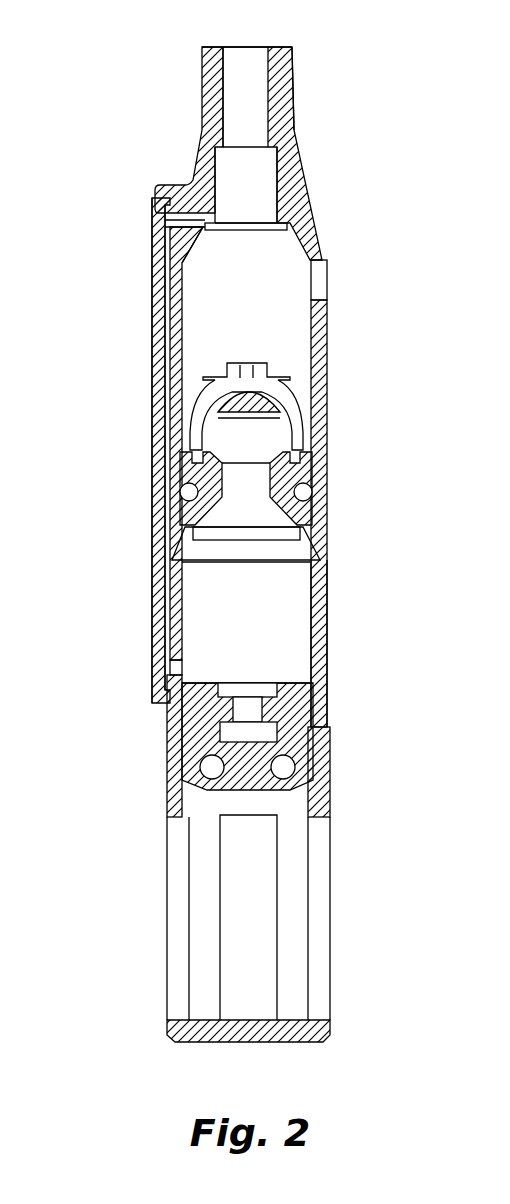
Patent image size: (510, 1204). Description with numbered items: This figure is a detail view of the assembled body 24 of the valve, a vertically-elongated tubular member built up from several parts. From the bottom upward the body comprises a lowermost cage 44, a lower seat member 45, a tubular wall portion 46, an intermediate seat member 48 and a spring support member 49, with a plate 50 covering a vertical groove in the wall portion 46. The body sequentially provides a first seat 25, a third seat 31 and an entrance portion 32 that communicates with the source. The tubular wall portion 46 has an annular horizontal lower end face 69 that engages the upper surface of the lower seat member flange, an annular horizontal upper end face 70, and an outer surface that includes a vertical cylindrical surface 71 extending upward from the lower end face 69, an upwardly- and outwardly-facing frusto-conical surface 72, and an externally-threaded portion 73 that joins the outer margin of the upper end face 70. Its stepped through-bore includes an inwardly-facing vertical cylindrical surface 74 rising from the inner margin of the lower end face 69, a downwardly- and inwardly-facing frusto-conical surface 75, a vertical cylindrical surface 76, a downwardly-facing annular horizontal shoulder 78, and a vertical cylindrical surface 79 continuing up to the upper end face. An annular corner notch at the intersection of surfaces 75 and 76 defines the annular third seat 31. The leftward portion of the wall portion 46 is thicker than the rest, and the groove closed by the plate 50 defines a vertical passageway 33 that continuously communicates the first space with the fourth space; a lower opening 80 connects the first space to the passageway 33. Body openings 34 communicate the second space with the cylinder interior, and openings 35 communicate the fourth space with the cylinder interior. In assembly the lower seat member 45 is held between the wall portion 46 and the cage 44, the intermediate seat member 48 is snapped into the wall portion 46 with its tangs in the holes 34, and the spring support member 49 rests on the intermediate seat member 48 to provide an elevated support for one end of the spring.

The assembled body 24 is at (122, 577).
The first seat 25 is at (272, 780).
The third seat 31 is at (280, 230).
The entrance portion 32 is at (247, 95).
The vertical passageway 33 is at (178, 350).
The body openings 34 is at (327, 527).
The body openings 35 is at (323, 280).
The lowermost cage 44 is at (168, 937).
The lower seat member 45 is at (172, 728).
The tubular wall portion 46 is at (327, 363).
The intermediate seat member 48 is at (192, 465).
The spring support member 49 is at (195, 407).
The plate 50 is at (160, 637).
The lower end face 69 is at (322, 730).
The upper end face 70 is at (283, 40).
The vertical cylindrical surface 71 is at (327, 590).
The frusto-conical surface 72 is at (308, 185).
The externally-threaded portion 73 is at (292, 75).
The vertical cylindrical surface 74 is at (180, 617).
The frusto-conical surface 75 is at (193, 252).
The vertical cylindrical surface 76 is at (277, 193).
The annular horizontal shoulder 78 is at (223, 150).
The vertical cylindrical surface 79 is at (238, 60).
The lower opening 80 is at (165, 678).